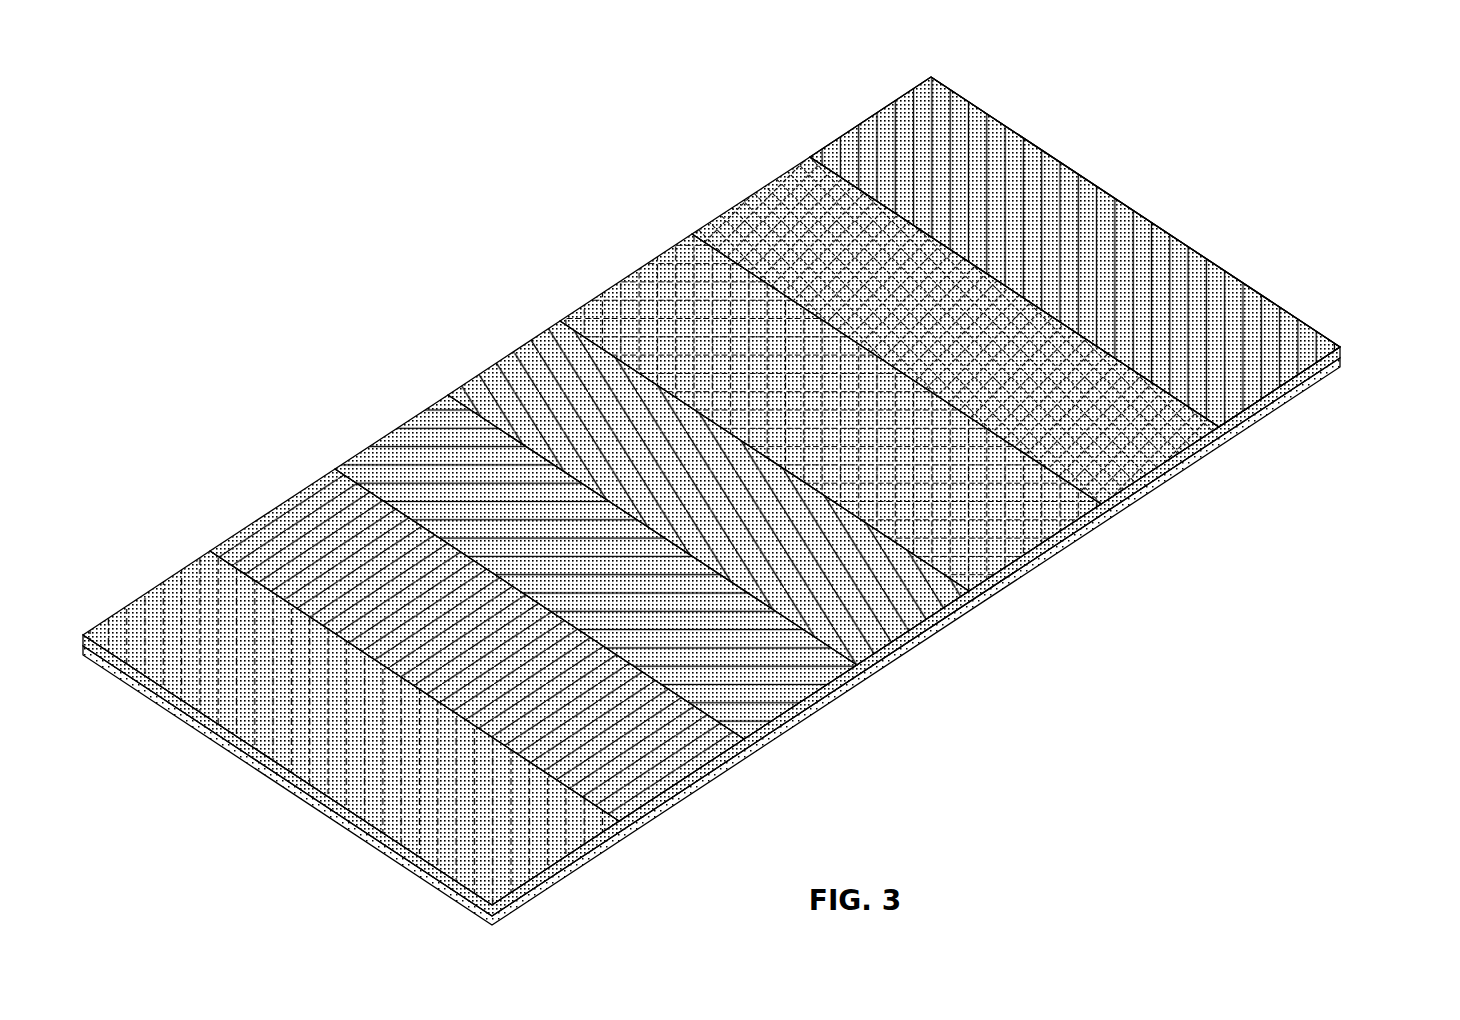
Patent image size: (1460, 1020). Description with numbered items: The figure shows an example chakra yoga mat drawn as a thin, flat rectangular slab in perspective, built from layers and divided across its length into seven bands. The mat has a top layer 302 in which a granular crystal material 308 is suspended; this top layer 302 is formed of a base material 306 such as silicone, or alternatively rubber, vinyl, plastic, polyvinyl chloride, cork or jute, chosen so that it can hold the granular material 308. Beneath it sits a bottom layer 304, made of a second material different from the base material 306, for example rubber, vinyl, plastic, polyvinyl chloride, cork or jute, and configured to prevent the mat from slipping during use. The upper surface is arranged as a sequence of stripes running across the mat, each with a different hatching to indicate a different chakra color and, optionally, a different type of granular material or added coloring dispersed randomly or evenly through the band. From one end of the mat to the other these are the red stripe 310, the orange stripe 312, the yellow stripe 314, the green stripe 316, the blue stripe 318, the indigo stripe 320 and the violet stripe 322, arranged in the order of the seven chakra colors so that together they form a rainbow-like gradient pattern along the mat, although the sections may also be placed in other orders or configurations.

The top layer 302 is at (1337, 345).
The bottom layer 304 is at (1342, 365).
The base material 306 is at (1122, 258).
The granular crystal material 308 is at (1177, 275).
The red stripe 310 is at (873, 153).
The orange stripe 312 is at (757, 237).
The yellow stripe 314 is at (637, 307).
The green stripe 316 is at (500, 365).
The blue stripe 318 is at (388, 462).
The indigo stripe 320 is at (263, 542).
The violet stripe 322 is at (142, 650).